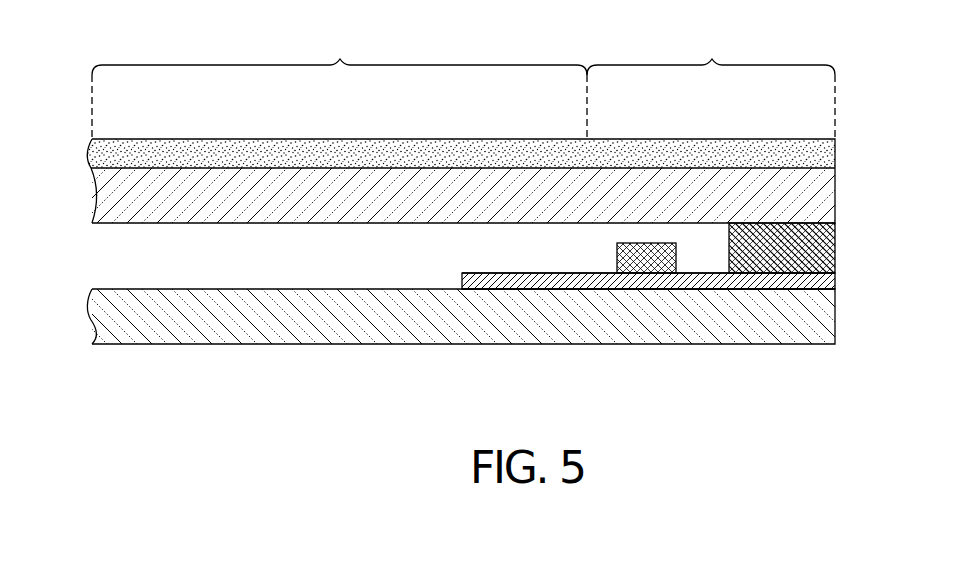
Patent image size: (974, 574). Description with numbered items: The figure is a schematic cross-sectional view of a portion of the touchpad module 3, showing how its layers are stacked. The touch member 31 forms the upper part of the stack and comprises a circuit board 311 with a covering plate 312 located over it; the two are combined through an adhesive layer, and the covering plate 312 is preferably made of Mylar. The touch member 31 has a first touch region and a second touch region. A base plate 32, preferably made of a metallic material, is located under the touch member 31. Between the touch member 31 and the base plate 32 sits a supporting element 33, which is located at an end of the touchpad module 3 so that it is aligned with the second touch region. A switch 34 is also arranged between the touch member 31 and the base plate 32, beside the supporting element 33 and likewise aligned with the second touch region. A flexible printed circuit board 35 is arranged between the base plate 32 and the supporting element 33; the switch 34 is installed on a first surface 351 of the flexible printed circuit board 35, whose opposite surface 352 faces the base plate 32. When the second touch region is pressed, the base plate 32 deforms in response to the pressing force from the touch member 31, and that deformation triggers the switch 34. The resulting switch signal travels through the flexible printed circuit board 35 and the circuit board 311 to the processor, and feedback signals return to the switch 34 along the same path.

The touchpad module 3 is at (848, 115).
The touch member 31 is at (917, 145).
The circuit board 311 is at (810, 192).
The covering plate 312 is at (810, 153).
The base plate 32 is at (822, 328).
The supporting element 33 is at (822, 258).
The switch 34 is at (640, 258).
The flexible printed circuit board 35 is at (480, 272).
The first surface 351 is at (543, 272).
The lower surface of conductive layer 352 is at (511, 291).